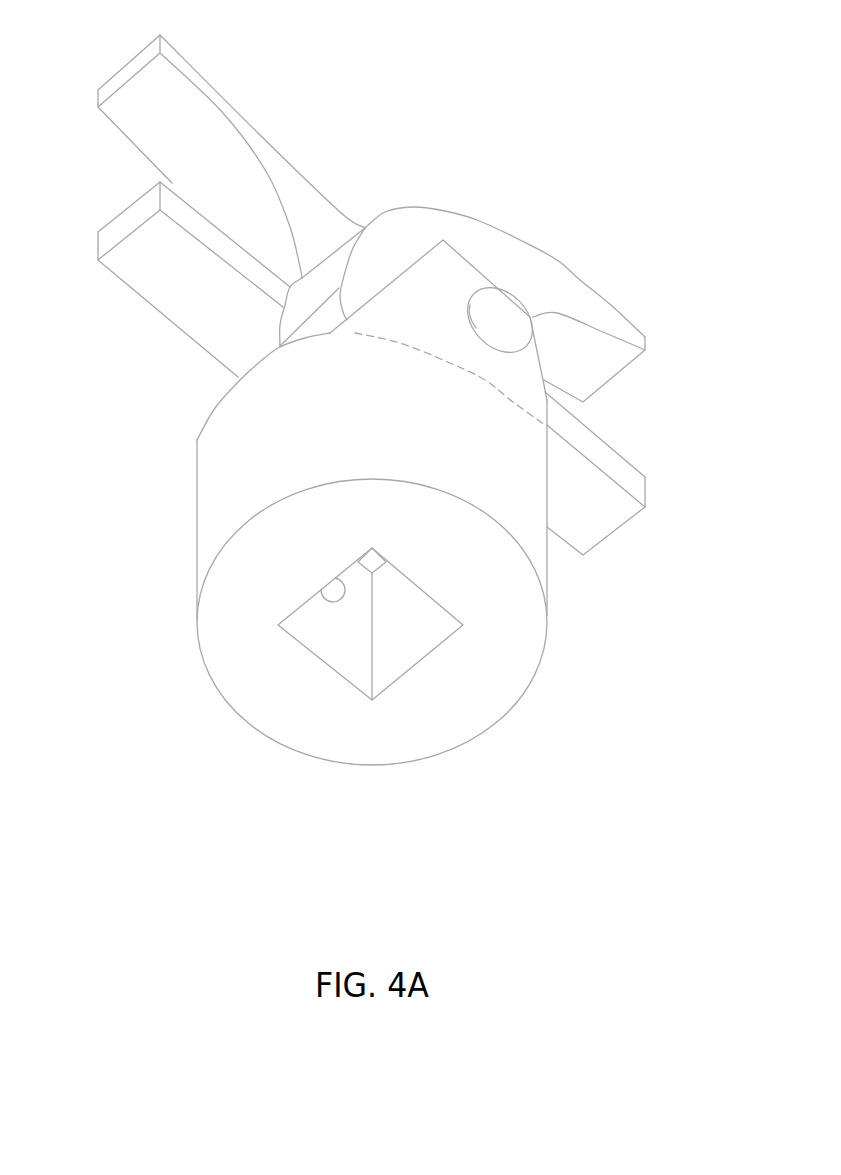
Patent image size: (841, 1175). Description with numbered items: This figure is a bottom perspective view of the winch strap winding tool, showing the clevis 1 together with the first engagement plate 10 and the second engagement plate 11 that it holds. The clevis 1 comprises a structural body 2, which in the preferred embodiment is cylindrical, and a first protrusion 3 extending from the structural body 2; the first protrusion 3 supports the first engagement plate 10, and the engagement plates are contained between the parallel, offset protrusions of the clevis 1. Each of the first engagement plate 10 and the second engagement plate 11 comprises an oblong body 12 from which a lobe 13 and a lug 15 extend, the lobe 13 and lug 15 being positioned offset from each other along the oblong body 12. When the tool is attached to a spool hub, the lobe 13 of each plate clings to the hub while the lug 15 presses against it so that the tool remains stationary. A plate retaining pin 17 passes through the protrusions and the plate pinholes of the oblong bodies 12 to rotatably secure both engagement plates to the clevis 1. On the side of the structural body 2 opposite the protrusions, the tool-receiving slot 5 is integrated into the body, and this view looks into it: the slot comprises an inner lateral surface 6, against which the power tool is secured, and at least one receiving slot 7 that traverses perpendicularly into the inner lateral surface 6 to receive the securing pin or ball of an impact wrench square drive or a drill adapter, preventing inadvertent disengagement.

The clevis 1 is at (113, 562).
The structural body 2 is at (207, 487).
The first protrusion 3 is at (488, 377).
The tool-receiving slot 5 is at (430, 640).
The inner lateral surface 6 is at (402, 668).
The at least one receiving slot 7 is at (331, 592).
The first engagement plate 10 is at (532, 203).
The second engagement plate 11 is at (302, 115).
The oblong body 12 is at (405, 207).
The lobe 13 is at (123, 73).
The lug 15 is at (120, 228).
The plate retaining pin 17 is at (493, 323).